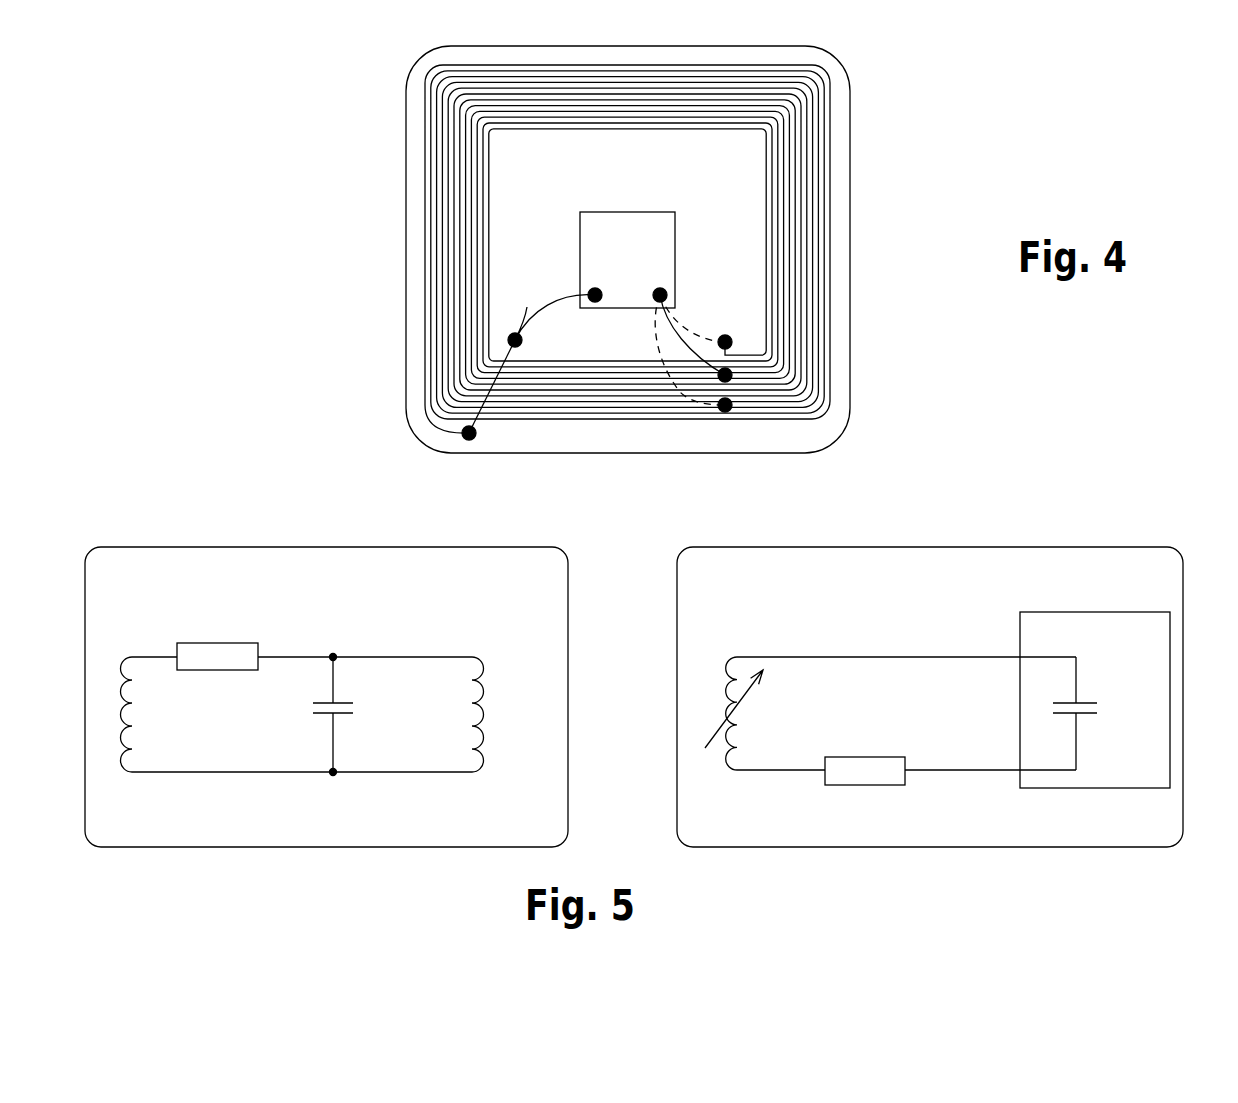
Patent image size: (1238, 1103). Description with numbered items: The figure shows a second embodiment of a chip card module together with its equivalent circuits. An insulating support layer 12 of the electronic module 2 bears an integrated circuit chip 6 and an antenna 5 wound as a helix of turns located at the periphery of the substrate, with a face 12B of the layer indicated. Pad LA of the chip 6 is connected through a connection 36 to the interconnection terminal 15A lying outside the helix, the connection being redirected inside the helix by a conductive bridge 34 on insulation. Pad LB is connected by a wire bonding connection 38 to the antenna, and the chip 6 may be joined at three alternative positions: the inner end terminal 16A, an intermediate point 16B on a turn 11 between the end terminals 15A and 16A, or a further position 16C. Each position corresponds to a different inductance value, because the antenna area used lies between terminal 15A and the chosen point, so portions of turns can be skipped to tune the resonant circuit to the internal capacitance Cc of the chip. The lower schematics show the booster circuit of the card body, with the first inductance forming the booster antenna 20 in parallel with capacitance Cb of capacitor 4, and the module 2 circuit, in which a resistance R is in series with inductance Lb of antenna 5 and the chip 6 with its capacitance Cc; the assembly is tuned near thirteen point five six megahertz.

In FIG. 5, the electronic module 2 is at (948, 662).
In FIG. 5, the capacitor 4 is at (370, 715).
In FIG. 4, the antenna 5 is at (833, 292).
In FIG. 5, the antenna 5 is at (762, 713).
In FIG. 4, the integrated circuit chip 6 is at (614, 228).
In FIG. 5, the integrated circuit chip 6 is at (1145, 673).
In FIG. 4, the turn 11 is at (468, 210).
In FIG. 4, the insulating support layer 12 is at (851, 215).
In FIG. 4, the substrate face 12B is at (851, 147).
In FIG. 4, the interconnection terminal 15A is at (470, 441).
In FIG. 4, the end terminal 16A is at (725, 342).
In FIG. 4, the intermediate point 16B is at (725, 375).
In FIG. 4, the alternative connection position 16C is at (725, 405).
In FIG. 5, the booster antenna 20 is at (326, 670).
In FIG. 4, the conductive bridge 34 is at (490, 392).
In FIG. 4, the connection 36 is at (527, 307).
In FIG. 4, the wire bonding connection 38 is at (663, 332).